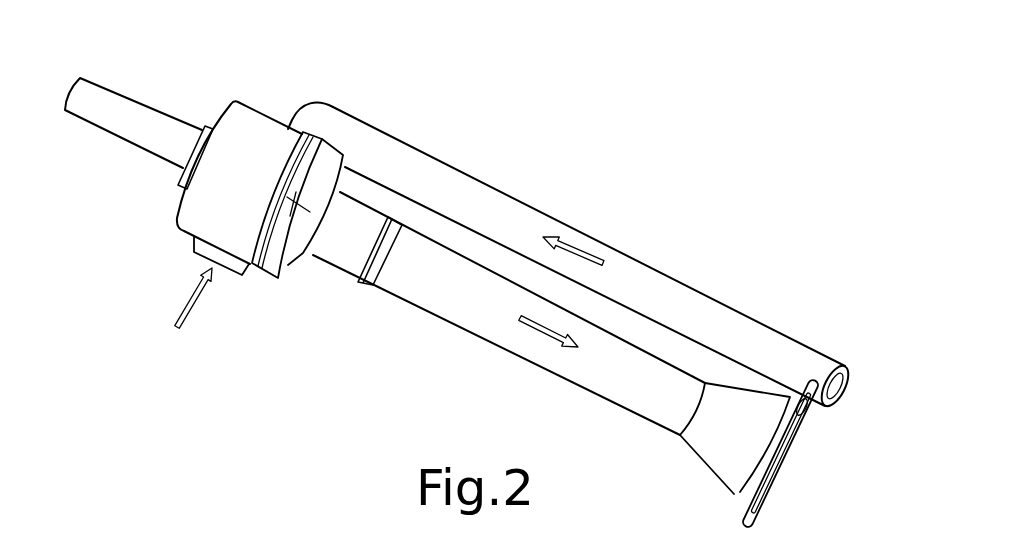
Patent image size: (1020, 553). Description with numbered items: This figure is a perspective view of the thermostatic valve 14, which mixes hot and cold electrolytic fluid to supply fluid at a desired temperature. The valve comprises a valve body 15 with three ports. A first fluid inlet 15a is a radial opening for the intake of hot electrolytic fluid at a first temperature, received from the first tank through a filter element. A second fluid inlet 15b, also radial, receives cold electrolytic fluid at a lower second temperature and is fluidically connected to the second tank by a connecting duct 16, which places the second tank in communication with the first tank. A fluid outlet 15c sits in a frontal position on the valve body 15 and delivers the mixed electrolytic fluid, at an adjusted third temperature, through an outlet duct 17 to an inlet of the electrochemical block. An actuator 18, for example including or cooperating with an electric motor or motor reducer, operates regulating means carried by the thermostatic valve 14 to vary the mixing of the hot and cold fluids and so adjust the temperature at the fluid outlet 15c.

The thermostatic valve 14 is at (381, 318).
The valve body 15 is at (232, 140).
The first fluid inlet 15a is at (197, 258).
The second fluid inlet 15b is at (281, 111).
The fluid outlet 15c is at (299, 263).
The connecting duct 16 is at (648, 278).
The outlet duct 17 is at (625, 382).
The actuator 18 is at (130, 113).